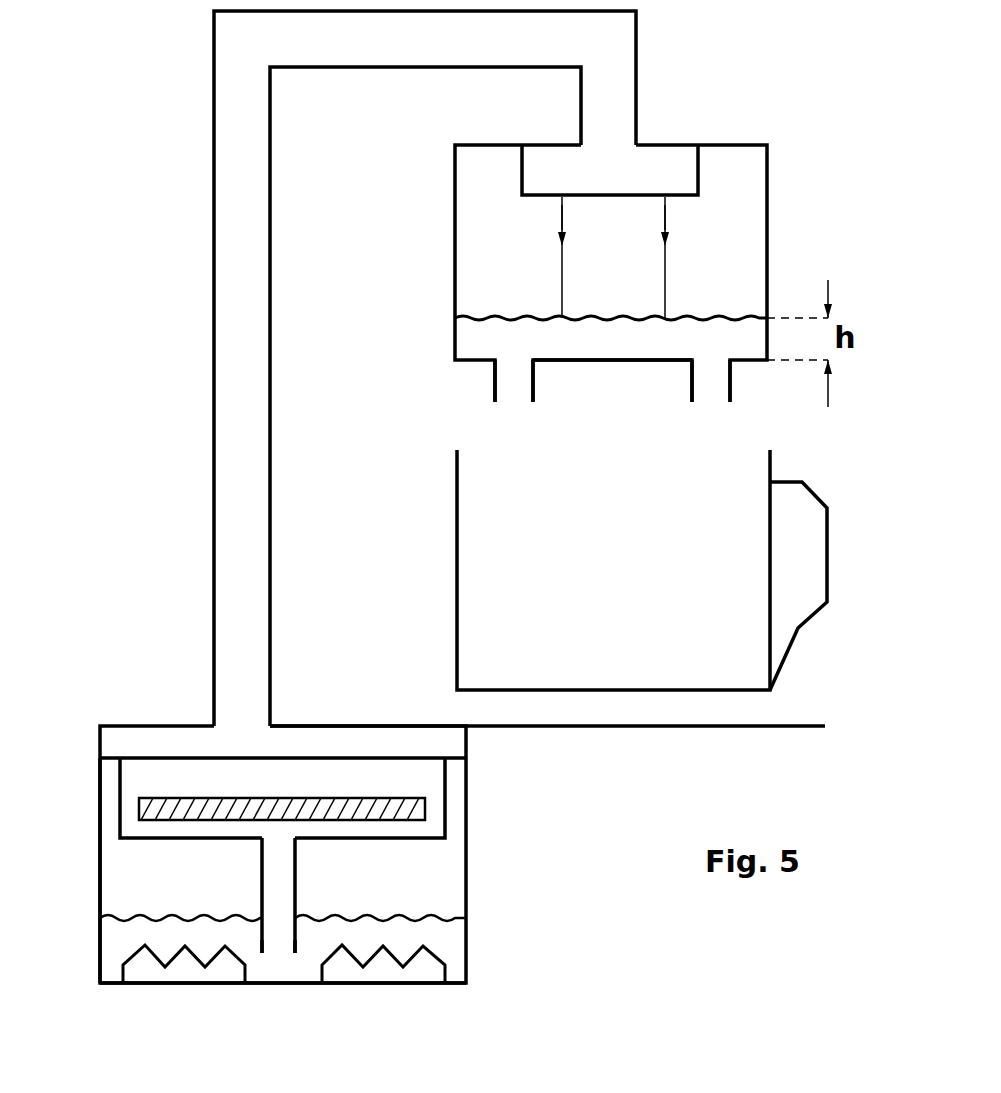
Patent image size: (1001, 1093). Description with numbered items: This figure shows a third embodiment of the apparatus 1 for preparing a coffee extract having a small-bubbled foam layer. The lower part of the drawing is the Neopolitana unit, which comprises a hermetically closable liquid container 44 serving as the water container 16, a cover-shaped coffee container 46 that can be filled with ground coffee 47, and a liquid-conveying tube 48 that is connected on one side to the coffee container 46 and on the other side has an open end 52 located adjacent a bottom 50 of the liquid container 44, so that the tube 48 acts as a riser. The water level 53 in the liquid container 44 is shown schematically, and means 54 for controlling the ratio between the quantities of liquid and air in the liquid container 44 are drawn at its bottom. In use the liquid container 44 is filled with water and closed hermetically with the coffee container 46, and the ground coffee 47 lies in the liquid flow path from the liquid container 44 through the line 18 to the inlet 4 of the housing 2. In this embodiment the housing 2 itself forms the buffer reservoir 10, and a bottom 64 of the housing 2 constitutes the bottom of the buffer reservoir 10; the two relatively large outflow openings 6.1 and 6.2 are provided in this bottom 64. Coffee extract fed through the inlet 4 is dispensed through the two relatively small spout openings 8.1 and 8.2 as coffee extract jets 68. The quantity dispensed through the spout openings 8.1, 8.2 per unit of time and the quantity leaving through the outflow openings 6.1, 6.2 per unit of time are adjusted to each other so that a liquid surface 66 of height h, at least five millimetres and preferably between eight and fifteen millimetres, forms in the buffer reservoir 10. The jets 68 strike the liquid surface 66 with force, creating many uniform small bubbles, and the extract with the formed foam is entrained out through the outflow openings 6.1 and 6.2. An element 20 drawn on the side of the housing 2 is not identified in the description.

The apparatus 1 is at (367, 212).
The housing 2 is at (770, 243).
The inlet 4 is at (652, 157).
The outflow opening 6.1 is at (507, 382).
The outflow opening 6.2 is at (715, 380).
The spout opening 8.1 is at (555, 198).
The spout opening 8.2 is at (667, 197).
The buffer reservoir 10 is at (595, 355).
The water container 16 is at (467, 858).
The line 18 is at (275, 532).
The sensor 20 is at (827, 567).
The liquid container 44 is at (98, 868).
The coffee container 46 is at (157, 777).
The ground coffee 47 is at (293, 807).
The liquid-conveying tube 48 is at (297, 902).
The bottom 50 is at (155, 985).
The open end 52 is at (280, 958).
The water level 53 is at (130, 917).
The means for controlling the ratio 54 is at (185, 967).
The bottom 64 is at (588, 362).
The liquid surface 66 is at (705, 317).
The coffee extract jets 68 is at (562, 223).